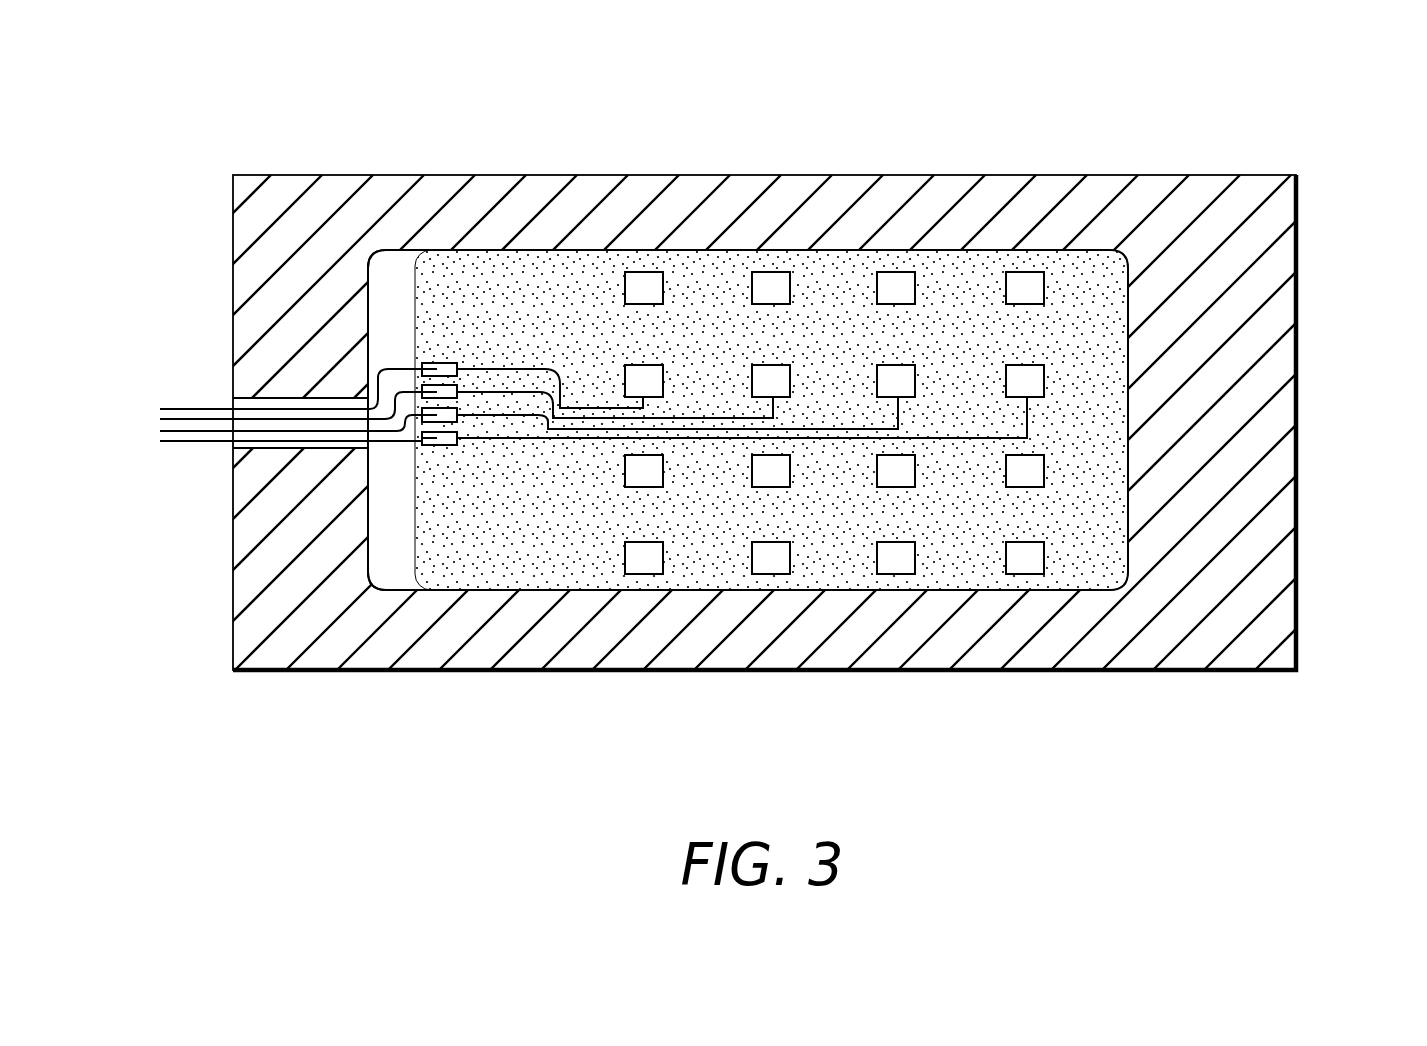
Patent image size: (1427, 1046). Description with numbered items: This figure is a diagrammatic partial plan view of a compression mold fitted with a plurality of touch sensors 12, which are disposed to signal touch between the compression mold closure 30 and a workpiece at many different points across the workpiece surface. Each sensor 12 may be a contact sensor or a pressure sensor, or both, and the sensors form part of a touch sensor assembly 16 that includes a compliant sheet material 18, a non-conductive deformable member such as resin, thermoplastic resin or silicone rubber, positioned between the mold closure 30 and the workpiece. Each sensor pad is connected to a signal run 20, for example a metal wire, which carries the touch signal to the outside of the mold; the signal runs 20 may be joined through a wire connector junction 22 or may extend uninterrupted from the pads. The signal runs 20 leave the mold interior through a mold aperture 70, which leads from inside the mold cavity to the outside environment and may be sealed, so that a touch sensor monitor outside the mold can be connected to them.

The sensor 12 is at (635, 271).
The touch sensor assembly 16 is at (408, 263).
The compliant sheet material 18 is at (1105, 410).
The signal run 20 is at (190, 408).
The wire connector junction 22 is at (457, 375).
The compression mold closure 30 is at (232, 190).
The mold aperture 70 is at (278, 453).